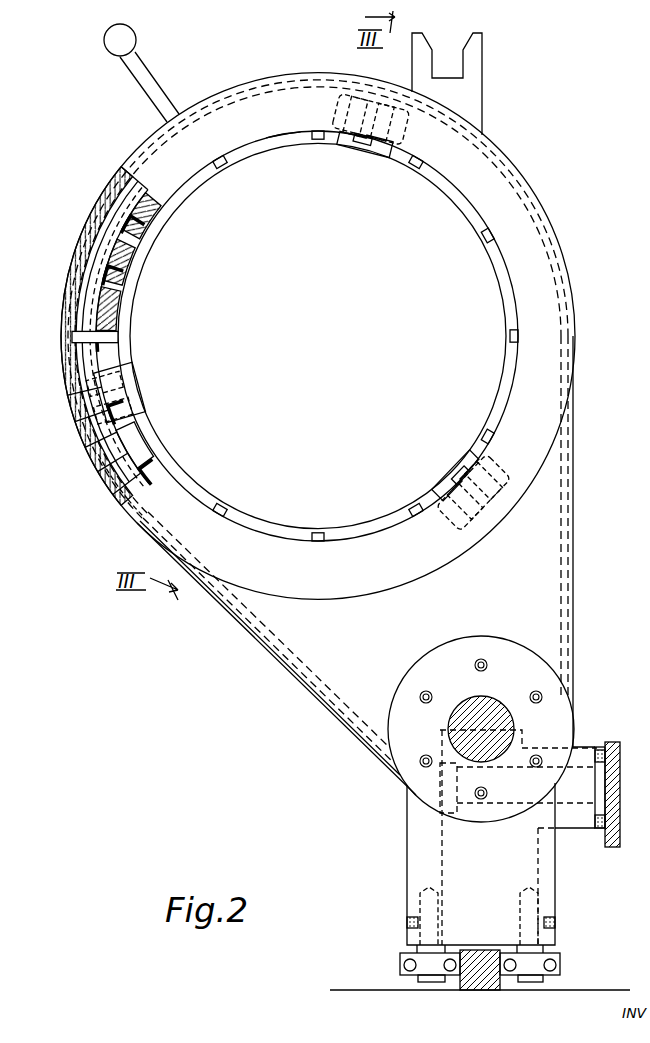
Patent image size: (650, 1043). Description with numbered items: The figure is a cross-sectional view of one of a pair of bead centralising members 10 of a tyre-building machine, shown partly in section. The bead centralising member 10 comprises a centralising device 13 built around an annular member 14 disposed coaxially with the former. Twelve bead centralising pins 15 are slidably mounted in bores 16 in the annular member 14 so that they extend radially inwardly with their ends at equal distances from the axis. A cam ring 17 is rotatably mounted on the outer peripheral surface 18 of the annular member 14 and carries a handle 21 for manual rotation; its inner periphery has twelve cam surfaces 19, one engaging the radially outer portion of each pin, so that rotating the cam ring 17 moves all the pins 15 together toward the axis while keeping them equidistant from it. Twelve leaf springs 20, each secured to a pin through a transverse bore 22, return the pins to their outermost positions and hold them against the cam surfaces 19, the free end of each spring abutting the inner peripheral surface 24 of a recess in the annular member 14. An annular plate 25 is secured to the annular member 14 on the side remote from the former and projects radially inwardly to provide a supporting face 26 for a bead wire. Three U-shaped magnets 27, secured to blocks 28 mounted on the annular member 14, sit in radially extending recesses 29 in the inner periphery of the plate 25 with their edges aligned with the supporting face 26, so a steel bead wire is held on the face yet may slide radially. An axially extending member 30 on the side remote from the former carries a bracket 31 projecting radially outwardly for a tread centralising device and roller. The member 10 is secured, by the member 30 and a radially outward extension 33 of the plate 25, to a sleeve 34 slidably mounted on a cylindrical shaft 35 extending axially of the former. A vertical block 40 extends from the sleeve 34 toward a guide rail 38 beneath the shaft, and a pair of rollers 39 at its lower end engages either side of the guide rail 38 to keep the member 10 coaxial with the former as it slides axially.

The bead centralising member 10 is at (584, 414).
The centralising device 13 is at (128, 343).
The annular member 14 is at (246, 147).
The bead centralising pins 15 is at (483, 240).
The bores 16 is at (115, 222).
The cam ring 17 is at (72, 262).
The outer peripheral surface 18 is at (100, 244).
The cam surfaces 19 is at (110, 222).
The leaf springs 20 is at (98, 288).
The handle 21 is at (135, 38).
The transverse bores 22 is at (96, 350).
The inner peripheral surface 24 is at (96, 308).
The annular plate 25 is at (500, 300).
The supporting face 26 is at (276, 150).
The U-shaped magnets 27 is at (353, 150).
The blocks 28 is at (368, 148).
The recesses 29 is at (338, 148).
The axially extending member 30 is at (566, 550).
The bracket 31 is at (478, 42).
The radially outward extension 33 is at (318, 672).
The sleeve 34 is at (462, 733).
The cylindrical shaft 35 is at (422, 754).
The guide rail 38 is at (483, 950).
The rollers 39 is at (404, 964).
The vertical blocks 40 is at (547, 870).